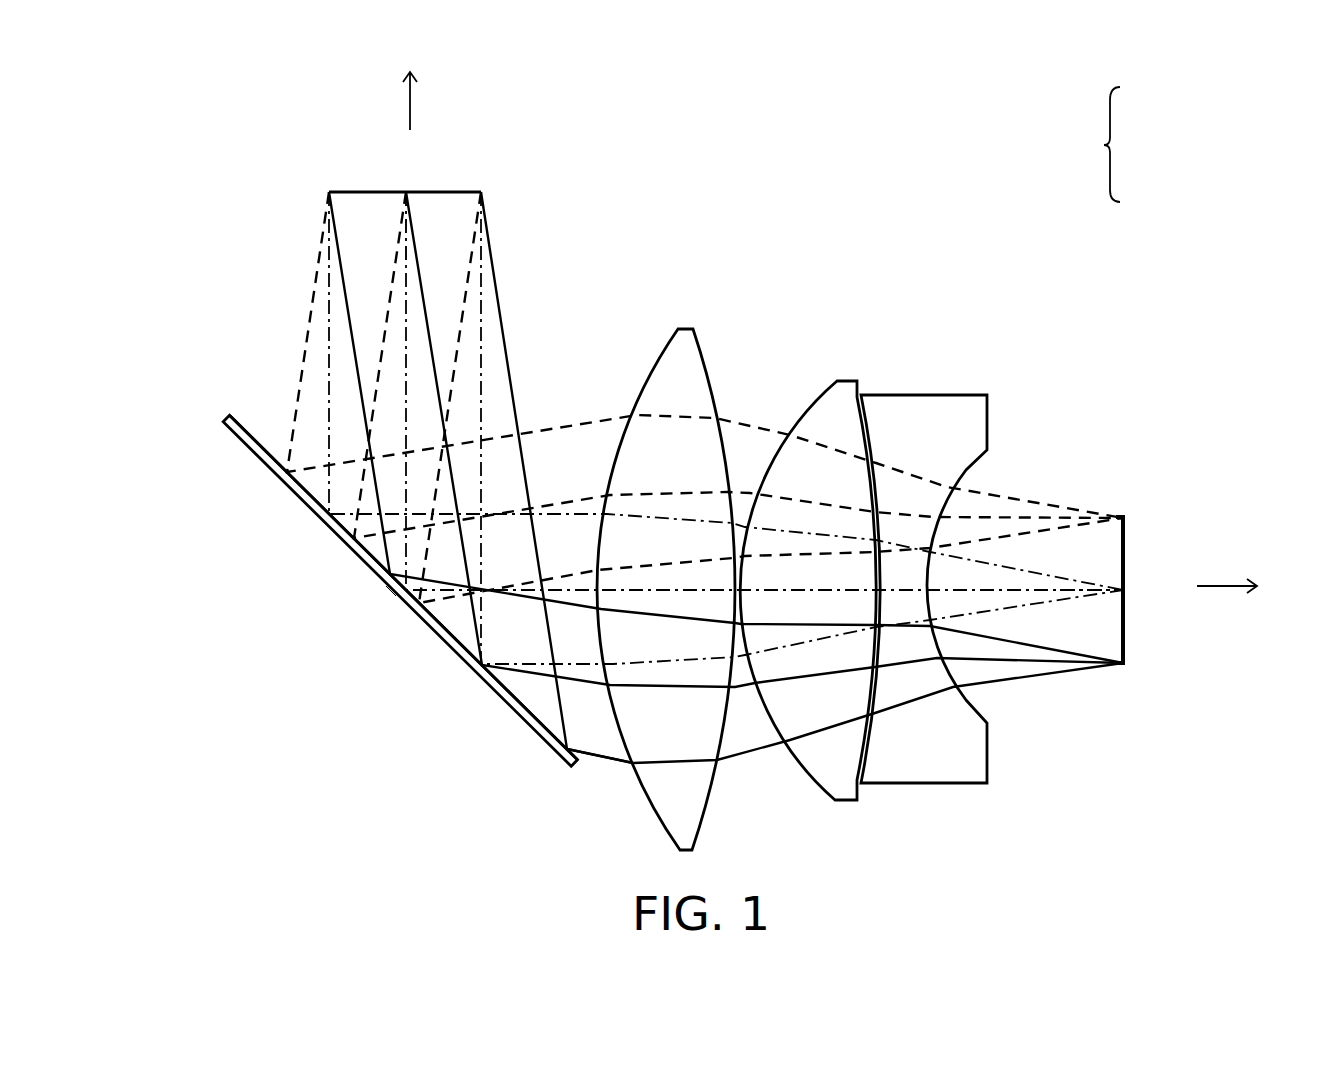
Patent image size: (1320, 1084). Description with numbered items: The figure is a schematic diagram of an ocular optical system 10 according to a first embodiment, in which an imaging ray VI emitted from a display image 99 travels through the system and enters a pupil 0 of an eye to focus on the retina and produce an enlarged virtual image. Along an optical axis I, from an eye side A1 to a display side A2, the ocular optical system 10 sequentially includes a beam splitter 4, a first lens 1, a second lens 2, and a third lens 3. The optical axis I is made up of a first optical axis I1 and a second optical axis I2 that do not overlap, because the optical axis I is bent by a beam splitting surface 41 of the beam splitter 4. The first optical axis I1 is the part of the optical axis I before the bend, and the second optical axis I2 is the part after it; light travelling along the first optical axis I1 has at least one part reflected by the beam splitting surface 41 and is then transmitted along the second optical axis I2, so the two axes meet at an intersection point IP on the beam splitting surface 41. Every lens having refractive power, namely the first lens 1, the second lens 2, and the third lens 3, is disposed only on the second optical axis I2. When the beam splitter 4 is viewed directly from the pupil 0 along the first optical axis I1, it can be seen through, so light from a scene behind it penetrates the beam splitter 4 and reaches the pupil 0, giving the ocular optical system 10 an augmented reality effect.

The ocular optical system 10 is at (248, 238).
The pupil 0 is at (443, 188).
The beam splitter 4 is at (233, 428).
The beam splitting surface 41 is at (313, 498).
The first lens 1 is at (685, 328).
The second lens 2 is at (848, 380).
The third lens 3 is at (950, 395).
The display image 99 is at (1125, 632).
The intersection point IP is at (383, 588).
The imaging ray VI is at (608, 762).
The first optical axis I1 is at (404, 233).
The second optical axis I2 is at (1065, 588).
The optical axis I is at (1120, 144).
The eye side A1 is at (426, 101).
The display side A2 is at (1227, 565).